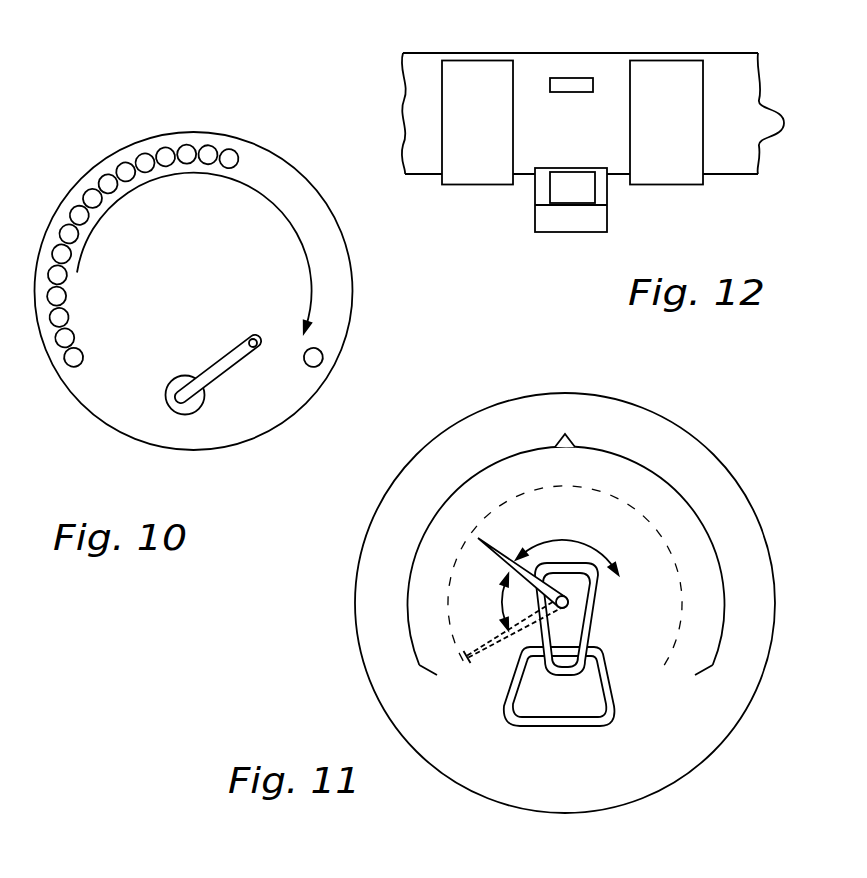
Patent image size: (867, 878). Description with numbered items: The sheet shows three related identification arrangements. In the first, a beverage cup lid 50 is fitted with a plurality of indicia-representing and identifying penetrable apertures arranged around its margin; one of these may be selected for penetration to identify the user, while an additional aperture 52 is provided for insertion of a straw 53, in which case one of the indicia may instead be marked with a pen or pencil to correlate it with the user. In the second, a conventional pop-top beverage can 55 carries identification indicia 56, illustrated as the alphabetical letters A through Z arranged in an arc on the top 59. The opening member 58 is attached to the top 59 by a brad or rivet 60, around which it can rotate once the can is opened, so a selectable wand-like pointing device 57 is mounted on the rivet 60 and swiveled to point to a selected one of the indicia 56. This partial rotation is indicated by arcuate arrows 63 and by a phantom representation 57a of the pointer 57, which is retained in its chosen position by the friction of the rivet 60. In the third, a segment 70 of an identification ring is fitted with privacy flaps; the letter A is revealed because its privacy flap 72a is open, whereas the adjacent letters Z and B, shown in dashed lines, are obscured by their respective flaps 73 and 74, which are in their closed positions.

In FIG. 10, the beverage cup lid 50 is at (342, 275).
In FIG. 10, the additional aperture 52 is at (175, 388).
In FIG. 10, the straw 53 is at (226, 357).
In FIG. 11, the pop-top beverage can 55 is at (325, 700).
In FIG. 11, the identification indicia 56 is at (565, 541).
In FIG. 11, the wand-like pointing device 57 is at (492, 548).
In FIG. 11, the phantom representation of wand-like pointer 57a is at (490, 646).
In FIG. 11, the opening member 58 is at (590, 605).
In FIG. 11, the top 59 is at (661, 775).
In FIG. 11, the brad or rivet 60 is at (569, 607).
In FIG. 11, the arcuate arrows 63 is at (582, 543).
In FIG. 12, the segment of identification ring 70 is at (580, 65).
In FIG. 12, the privacy flap 72a is at (603, 210).
In FIG. 12, the flap 73 is at (472, 174).
In FIG. 12, the flap 74 is at (673, 176).